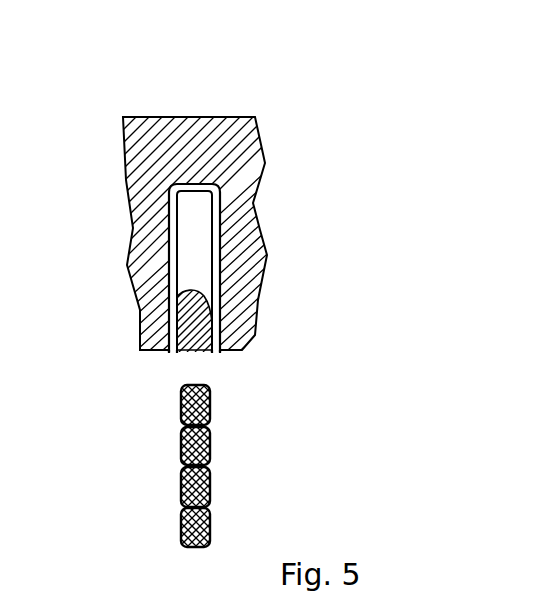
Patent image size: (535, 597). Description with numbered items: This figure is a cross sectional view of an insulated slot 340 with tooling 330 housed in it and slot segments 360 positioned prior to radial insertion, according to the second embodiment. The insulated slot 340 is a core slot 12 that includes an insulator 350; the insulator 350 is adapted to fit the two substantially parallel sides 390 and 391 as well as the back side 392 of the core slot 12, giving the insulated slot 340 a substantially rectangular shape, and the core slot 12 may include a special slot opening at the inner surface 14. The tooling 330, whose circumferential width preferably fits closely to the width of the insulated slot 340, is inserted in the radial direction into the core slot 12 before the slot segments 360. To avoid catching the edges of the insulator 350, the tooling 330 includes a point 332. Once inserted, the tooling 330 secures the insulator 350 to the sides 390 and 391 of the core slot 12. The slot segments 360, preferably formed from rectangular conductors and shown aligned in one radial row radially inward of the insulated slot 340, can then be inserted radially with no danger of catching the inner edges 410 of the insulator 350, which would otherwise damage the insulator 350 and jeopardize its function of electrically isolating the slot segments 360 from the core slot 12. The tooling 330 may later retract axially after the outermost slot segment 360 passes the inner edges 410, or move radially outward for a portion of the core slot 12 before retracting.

The insulated slot 340 is at (260, 212).
The inner surface 14 is at (240, 332).
The core slot 12 is at (190, 202).
The back side 392 is at (233, 148).
The side 391 is at (228, 225).
The side 390 is at (167, 237).
The insulator 350 is at (218, 262).
The point 332 is at (190, 297).
The tooling 330 is at (177, 322).
The inner edges 410 is at (173, 353).
The slot segments 360 is at (209, 412).